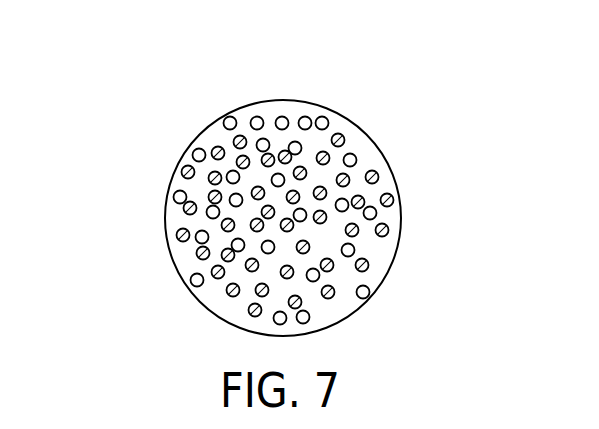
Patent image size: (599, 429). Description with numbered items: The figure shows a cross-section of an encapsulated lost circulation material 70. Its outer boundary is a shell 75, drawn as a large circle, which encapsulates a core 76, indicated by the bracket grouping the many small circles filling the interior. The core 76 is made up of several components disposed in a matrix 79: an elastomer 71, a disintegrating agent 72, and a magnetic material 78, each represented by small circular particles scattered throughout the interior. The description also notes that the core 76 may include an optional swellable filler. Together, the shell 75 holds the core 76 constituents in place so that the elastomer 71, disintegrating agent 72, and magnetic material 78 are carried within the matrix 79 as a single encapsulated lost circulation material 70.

The encapsulated lost circulation material 70 is at (122, 143).
The shell 75 is at (282, 100).
The core 76 is at (496, 112).
The disintegrating agent 72 is at (345, 139).
The matrix 79 is at (355, 171).
The magnetic material 78 is at (377, 213).
The elastomer 71 is at (292, 227).